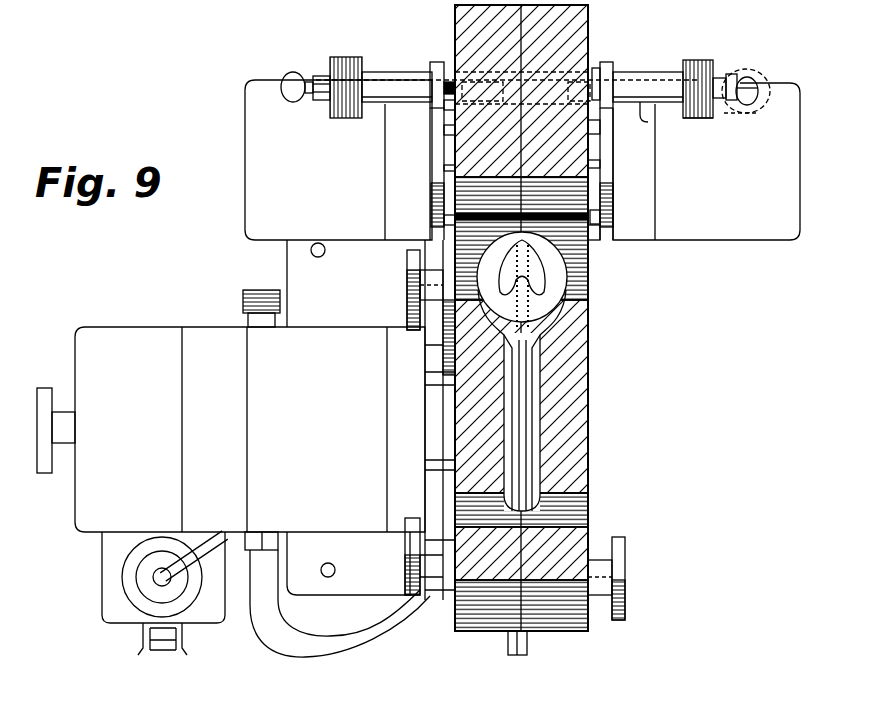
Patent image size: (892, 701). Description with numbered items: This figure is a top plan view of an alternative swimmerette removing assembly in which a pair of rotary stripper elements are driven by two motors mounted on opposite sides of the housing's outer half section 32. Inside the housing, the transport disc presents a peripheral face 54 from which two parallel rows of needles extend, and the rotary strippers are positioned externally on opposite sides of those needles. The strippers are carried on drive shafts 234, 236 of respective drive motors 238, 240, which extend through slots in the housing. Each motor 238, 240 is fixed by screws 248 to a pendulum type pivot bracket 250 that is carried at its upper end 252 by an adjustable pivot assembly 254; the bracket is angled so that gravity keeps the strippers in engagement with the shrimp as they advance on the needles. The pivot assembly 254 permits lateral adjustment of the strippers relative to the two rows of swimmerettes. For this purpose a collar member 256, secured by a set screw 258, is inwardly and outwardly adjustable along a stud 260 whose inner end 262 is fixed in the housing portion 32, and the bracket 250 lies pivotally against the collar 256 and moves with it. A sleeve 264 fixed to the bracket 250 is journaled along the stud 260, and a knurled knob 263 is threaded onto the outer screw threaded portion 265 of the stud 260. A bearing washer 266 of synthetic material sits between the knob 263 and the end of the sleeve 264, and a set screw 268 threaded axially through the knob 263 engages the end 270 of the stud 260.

The outer half section 32 is at (583, 425).
The peripheral face 54 is at (540, 324).
The drive shaft 234 is at (448, 166).
The drive shaft 236 is at (598, 164).
The drive motor 238 is at (345, 185).
The drive motor 240 is at (748, 188).
The screws 248 is at (592, 238).
The pivot bracket 250 is at (604, 184).
The upper end 252 is at (438, 63).
The adjustable pivot assembly 254 is at (722, 48).
The collar member 256 is at (598, 66).
The set screw 258 is at (616, 78).
The stud 260 is at (661, 72).
The inner end 262 is at (540, 74).
The knurled knob 263 is at (714, 66).
The sleeve 264 is at (648, 122).
The outer screw threaded portion 265 is at (726, 69).
The bearing washer 266 is at (696, 120).
The set screw 268 is at (757, 94).
The end 270 is at (757, 115).